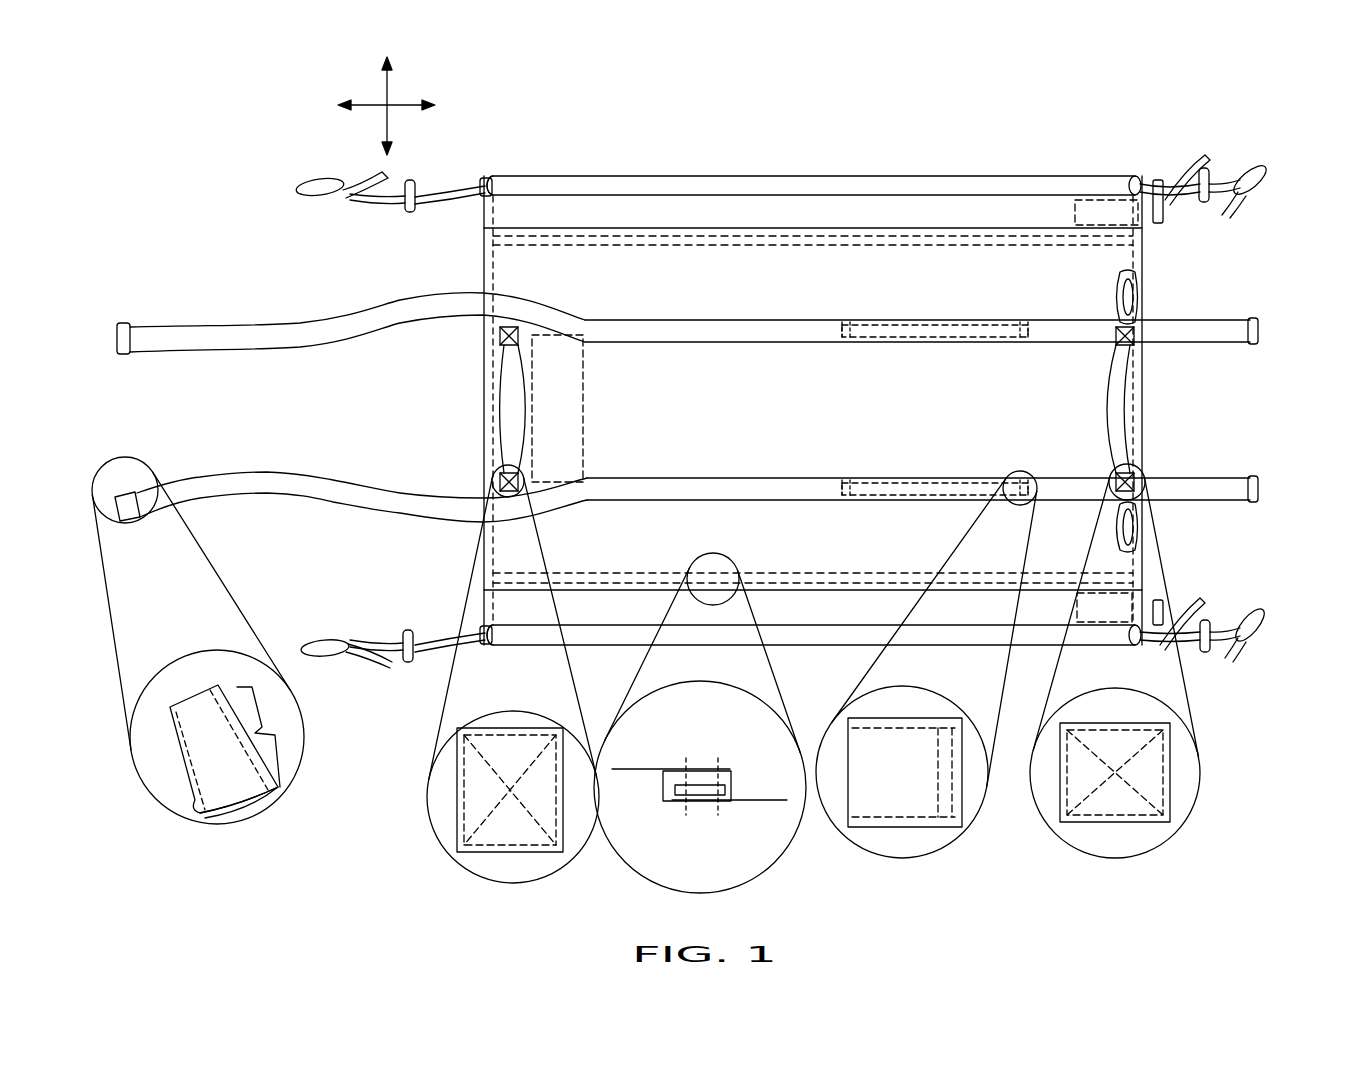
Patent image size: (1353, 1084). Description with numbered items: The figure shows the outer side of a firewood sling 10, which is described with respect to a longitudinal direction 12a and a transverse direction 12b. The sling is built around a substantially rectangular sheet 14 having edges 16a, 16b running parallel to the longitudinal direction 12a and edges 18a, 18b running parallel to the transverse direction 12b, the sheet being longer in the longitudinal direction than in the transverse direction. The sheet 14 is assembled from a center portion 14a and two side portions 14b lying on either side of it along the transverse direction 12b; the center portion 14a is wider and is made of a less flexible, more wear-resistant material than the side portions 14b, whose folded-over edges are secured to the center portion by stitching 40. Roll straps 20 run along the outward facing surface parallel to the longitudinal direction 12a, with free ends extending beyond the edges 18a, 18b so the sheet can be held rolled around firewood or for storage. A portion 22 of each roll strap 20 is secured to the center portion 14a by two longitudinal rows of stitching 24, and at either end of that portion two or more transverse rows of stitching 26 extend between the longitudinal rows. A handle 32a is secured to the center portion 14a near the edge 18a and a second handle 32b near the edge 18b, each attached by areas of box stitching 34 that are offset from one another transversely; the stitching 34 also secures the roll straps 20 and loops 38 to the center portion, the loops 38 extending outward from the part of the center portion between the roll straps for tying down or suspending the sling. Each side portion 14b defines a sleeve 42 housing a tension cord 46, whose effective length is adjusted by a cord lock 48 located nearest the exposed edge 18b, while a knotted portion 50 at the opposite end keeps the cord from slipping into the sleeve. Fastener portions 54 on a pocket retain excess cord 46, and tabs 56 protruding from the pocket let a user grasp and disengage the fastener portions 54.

The firewood sling 10 is at (222, 236).
The longitudinal direction 12a is at (422, 103).
The transverse direction 12b is at (390, 92).
The sheet 14 is at (1148, 267).
The center portion 14a is at (716, 298).
The side portions 14b is at (696, 220).
The edge 16a is at (612, 176).
The edge 16b is at (782, 645).
The edge 18a is at (490, 378).
The edge 18b is at (1150, 390).
The roll straps 20 is at (296, 338).
The portion of roll strap 22 is at (892, 336).
The rows of stitching 24 is at (882, 816).
The rows of stitching 26 is at (948, 816).
The handle 32a is at (517, 430).
The second handle 32b is at (1115, 400).
The stitching 34 is at (498, 338).
The loops 38 is at (1120, 300).
The stitching 40 is at (755, 245).
The sleeve 42 is at (938, 186).
The tension cord 46 is at (1157, 178).
The cord lock 48 is at (402, 214).
The knotted portion 50 is at (328, 178).
The fastener portions 54 is at (1120, 210).
The tabs 56 is at (1205, 165).